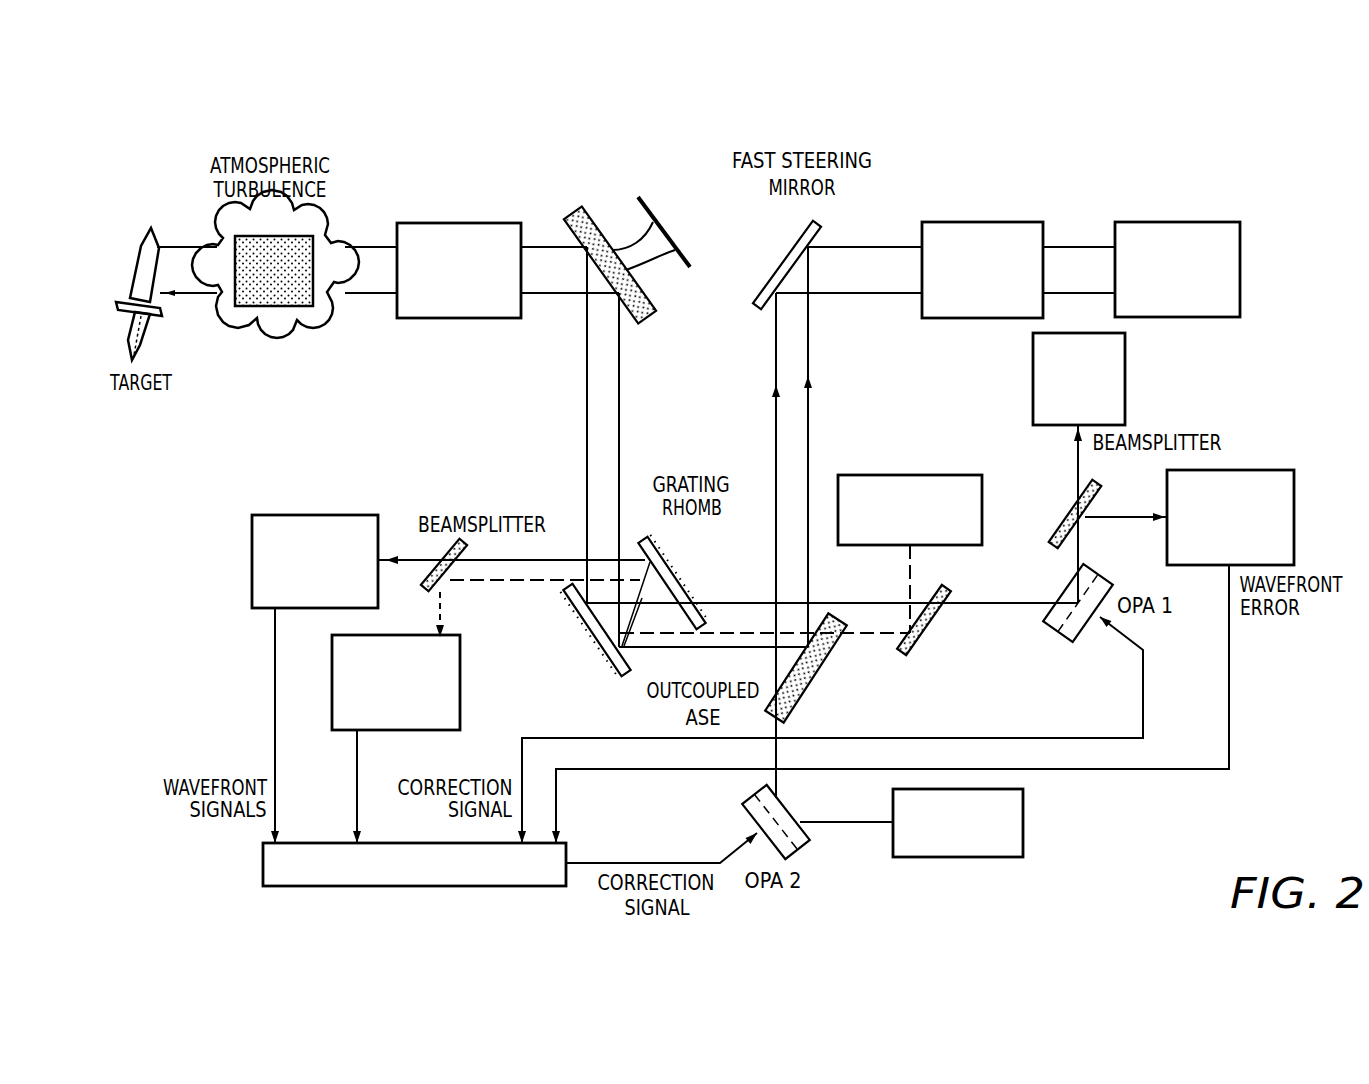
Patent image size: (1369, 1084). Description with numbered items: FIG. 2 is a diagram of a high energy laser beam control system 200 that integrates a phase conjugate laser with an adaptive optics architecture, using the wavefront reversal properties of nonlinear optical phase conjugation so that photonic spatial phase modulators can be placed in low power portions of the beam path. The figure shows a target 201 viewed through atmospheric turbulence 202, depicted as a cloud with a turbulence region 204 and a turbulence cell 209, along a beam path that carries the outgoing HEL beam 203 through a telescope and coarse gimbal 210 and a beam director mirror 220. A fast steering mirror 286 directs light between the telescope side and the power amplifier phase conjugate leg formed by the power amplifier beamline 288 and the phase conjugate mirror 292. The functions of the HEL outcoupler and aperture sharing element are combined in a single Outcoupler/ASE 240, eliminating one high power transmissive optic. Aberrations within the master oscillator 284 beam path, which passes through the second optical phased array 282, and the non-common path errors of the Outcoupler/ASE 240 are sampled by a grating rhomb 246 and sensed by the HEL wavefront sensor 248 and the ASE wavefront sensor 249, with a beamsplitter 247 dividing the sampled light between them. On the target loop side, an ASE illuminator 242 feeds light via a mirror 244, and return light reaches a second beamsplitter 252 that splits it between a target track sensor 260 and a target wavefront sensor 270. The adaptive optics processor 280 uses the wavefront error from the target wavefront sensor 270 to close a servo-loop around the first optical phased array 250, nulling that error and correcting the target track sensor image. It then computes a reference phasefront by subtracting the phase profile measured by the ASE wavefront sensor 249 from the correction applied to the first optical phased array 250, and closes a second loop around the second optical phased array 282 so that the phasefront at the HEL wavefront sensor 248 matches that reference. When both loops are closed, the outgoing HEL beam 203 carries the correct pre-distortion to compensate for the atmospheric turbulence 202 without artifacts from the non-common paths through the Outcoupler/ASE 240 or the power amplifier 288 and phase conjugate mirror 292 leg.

The beam control system 200 is at (1265, 196).
The target 201 is at (137, 267).
The atmospheric turbulence 202 is at (217, 227).
The outgoing HEL beam 203 is at (188, 297).
The turbulence region 204 is at (320, 237).
The turbulence cell 209 is at (275, 312).
The telescope and coarse gimbal 210 is at (458, 320).
The beam director mirror 220 is at (583, 217).
The outcoupler and aperture sharing element 240 is at (818, 670).
The ASE illuminator 242 is at (912, 473).
The mirror 244 is at (933, 623).
The grating rhomb 246 is at (675, 575).
The beamsplitter 247 is at (440, 553).
The HEL wavefront sensor 248 is at (252, 560).
The ASE wavefront sensor 249 is at (462, 663).
The optical phased array OPA 1 250 is at (1088, 633).
The beamsplitter 252 is at (1063, 520).
The target track sensor 260 is at (1127, 377).
The target wavefront sensor 270 is at (1270, 470).
The adaptive optics processor 280 is at (262, 863).
The optical phased array OPA 2 282 is at (808, 843).
The master oscillator 284 is at (1025, 822).
The fast steering mirror 286 is at (783, 268).
The power amplifier 288 is at (983, 222).
The phase conjugate mirror 292 is at (1243, 268).